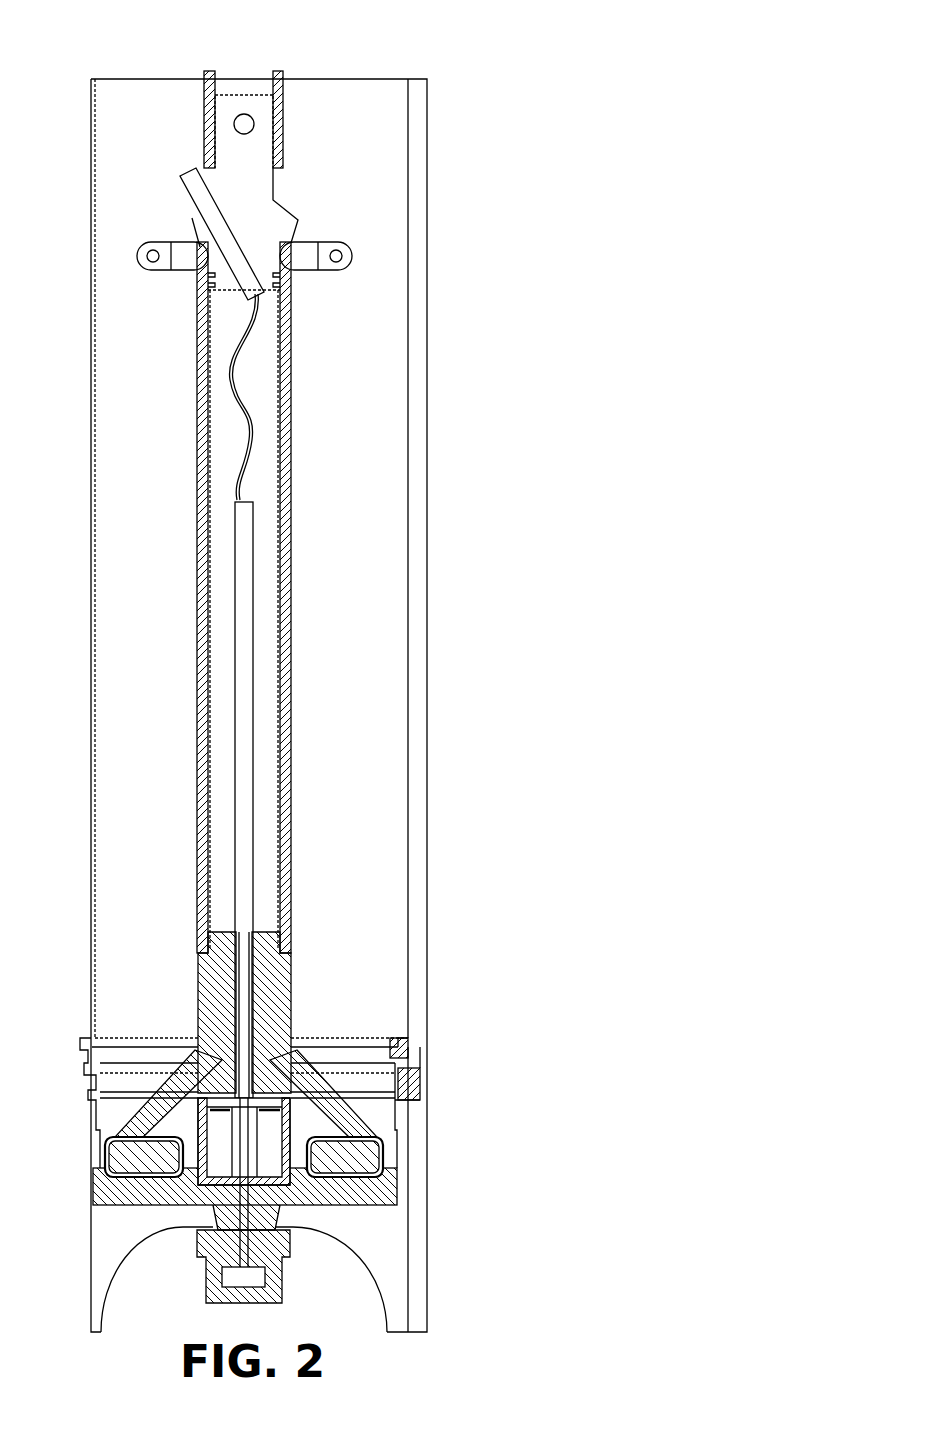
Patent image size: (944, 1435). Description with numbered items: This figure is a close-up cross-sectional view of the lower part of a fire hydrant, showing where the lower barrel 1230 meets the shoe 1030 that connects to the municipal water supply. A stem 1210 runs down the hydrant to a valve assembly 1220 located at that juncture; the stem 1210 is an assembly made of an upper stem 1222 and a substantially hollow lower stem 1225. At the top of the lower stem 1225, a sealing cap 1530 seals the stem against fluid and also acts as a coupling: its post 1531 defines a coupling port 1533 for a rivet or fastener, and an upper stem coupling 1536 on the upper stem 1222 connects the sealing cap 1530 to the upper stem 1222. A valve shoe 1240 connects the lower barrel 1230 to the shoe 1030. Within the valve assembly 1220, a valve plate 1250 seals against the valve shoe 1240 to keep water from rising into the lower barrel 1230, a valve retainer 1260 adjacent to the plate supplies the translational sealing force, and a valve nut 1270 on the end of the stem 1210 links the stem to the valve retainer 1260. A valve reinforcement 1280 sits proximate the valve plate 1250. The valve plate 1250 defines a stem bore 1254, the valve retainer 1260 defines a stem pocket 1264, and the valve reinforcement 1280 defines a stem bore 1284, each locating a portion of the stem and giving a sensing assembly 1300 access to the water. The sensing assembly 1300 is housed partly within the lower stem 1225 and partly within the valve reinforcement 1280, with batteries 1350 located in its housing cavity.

The shoe 1030 is at (407, 1227).
The stem 1210 is at (288, 103).
The valve assembly 1220 is at (460, 1083).
The upper stem 1222 is at (276, 67).
The lower stem 1225 is at (296, 533).
The lower barrel 1230 is at (428, 811).
The valve shoe 1240 is at (380, 1040).
The valve plate 1250 is at (395, 1165).
The stem bore 1254 is at (290, 1120).
The valve retainer 1260 is at (393, 1177).
The stem pocket 1264 is at (300, 1232).
The valve nut 1270 is at (282, 1290).
The valve reinforcement 1280 is at (330, 1050).
The stem bore 1284 is at (300, 1065).
The sensing assembly 1300 is at (267, 1131).
The batteries 1350 is at (405, 1090).
The sealing cap 1530 is at (265, 202).
The post 1531 is at (265, 113).
The coupling port 1533 is at (250, 132).
The upper stem coupling 1536 is at (207, 90).